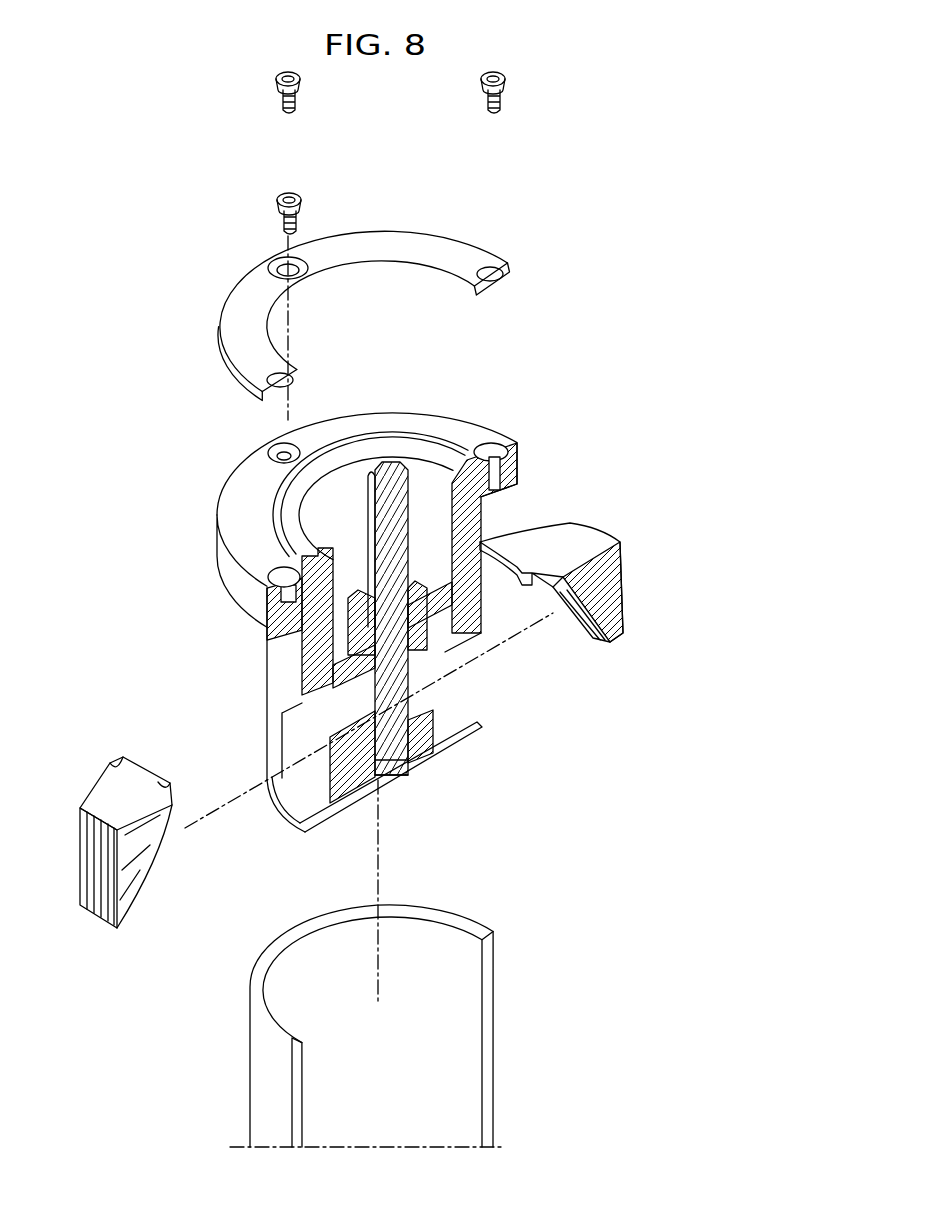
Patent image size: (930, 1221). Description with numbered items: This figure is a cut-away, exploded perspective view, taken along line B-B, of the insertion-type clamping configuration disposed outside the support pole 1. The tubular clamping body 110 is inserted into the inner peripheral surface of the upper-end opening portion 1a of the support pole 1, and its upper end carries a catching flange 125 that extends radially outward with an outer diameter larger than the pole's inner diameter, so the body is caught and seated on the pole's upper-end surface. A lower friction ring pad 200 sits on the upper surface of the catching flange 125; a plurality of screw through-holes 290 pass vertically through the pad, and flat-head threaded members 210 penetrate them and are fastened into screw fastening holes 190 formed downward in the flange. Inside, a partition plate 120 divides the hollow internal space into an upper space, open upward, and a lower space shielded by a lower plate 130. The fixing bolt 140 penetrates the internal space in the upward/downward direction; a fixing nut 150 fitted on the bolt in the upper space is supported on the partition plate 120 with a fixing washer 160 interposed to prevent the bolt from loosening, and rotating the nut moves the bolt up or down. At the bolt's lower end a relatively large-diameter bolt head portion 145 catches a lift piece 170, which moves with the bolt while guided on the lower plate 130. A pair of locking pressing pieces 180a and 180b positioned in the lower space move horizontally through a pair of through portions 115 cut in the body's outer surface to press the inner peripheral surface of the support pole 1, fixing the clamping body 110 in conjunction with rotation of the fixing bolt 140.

The support pole 1 is at (262, 1080).
The upper-end opening portion 1a is at (423, 1064).
The clamping body 110 is at (282, 658).
The through portions 115 is at (275, 740).
The partition plate 120 is at (443, 612).
The catching flange 125 is at (218, 556).
The lower plate 130 is at (470, 738).
The fixing bolt 140 is at (405, 462).
The bolt head portion 145 is at (403, 777).
The fixing nut 150 is at (413, 607).
The fixing washer 160 is at (440, 645).
The lift piece 170 is at (453, 753).
The locking pressing piece 180a is at (97, 900).
The locking pressing piece 180b is at (620, 600).
The screw fastening holes 190 is at (493, 447).
The lower friction ring pad 200 is at (225, 317).
The flat-head threaded members 210 is at (278, 197).
The screw through-holes 290 is at (275, 257).